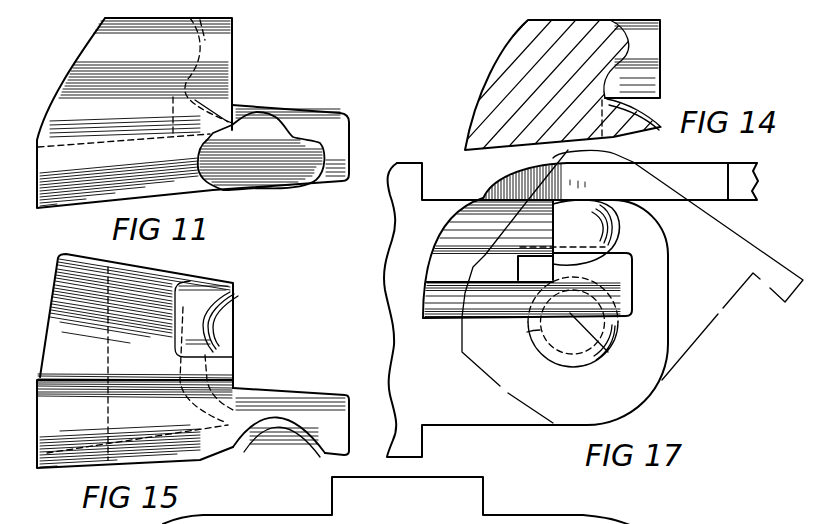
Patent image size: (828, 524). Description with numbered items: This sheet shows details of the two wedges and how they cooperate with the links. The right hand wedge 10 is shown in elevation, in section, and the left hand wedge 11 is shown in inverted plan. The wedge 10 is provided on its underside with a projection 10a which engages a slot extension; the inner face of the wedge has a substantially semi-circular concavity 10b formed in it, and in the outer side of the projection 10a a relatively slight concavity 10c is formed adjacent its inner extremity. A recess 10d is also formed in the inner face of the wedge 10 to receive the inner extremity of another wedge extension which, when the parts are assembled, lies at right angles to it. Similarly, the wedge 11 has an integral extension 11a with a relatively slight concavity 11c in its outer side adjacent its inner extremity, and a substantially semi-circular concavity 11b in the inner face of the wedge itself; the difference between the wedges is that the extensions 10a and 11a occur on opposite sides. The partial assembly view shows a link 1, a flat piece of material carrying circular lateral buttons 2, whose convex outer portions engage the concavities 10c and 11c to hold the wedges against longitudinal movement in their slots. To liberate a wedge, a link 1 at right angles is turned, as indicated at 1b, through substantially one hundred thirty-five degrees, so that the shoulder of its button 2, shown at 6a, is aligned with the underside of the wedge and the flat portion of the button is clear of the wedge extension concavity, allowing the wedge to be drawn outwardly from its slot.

In FIG. 11, the right hand wedge 10 is at (84, 56).
In FIG. 14, the right hand wedge 10 is at (581, 26).
In FIG. 11, the projection 10a is at (309, 114).
In FIG. 11, the semi-circular concavity 10b is at (203, 57).
In FIG. 14, the semi-circular concavity 10b is at (626, 53).
In FIG. 11, the slight concavity 10c is at (261, 151).
In FIG. 11, the recess 10d is at (173, 107).
In FIG. 14, the recess 10d is at (615, 137).
In FIG. 15, the left hand wedge 11 is at (135, 361).
In FIG. 17, the left hand wedge 11 is at (431, 273).
In FIG. 15, the integral extension 11a is at (288, 396).
In FIG. 17, the integral extension 11a is at (429, 323).
In FIG. 15, the semi-circular concavity 11b is at (219, 330).
In FIG. 15, the slight concavity 11c is at (268, 445).
In FIG. 17, the link 1 is at (571, 303).
In FIG. 17, the turned link 1b is at (678, 265).
In FIG. 17, the button 2 is at (578, 378).
In FIG. 17, the shoulder 6a is at (527, 332).